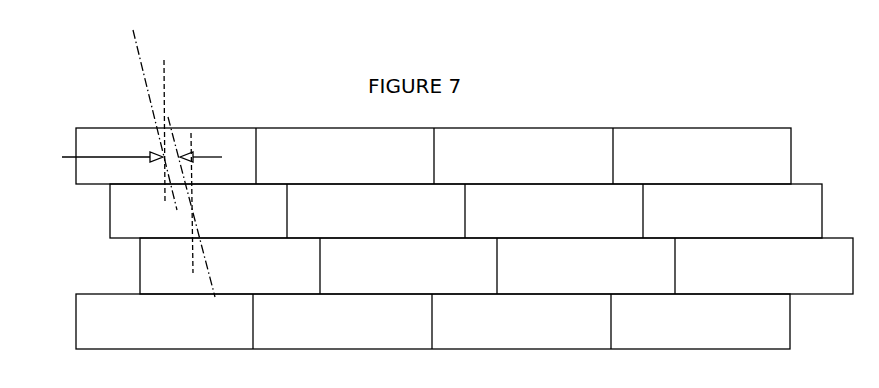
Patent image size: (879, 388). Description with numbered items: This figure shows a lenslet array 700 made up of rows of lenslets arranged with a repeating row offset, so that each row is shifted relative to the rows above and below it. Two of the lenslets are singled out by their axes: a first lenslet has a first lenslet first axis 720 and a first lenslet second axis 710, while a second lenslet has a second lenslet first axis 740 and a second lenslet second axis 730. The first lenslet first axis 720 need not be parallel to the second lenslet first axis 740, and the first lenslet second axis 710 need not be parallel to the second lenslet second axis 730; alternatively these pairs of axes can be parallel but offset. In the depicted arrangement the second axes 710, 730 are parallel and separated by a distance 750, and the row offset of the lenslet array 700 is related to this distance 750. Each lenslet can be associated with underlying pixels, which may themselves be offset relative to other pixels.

The lenslet array 700 is at (599, 102).
The first lenslet second axis 710 is at (186, 129).
The first lenslet first axis 720 is at (139, 110).
The second lenslet second axis 730 is at (171, 205).
The second lenslet first axis 740 is at (209, 207).
The offset distance 750 is at (122, 156).